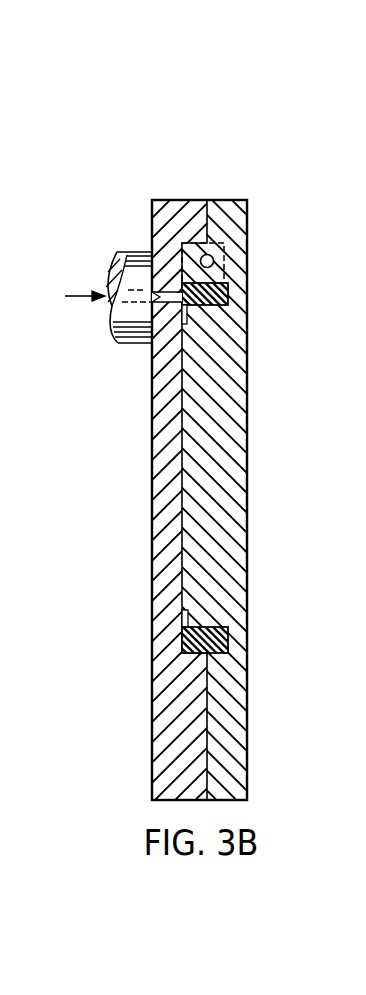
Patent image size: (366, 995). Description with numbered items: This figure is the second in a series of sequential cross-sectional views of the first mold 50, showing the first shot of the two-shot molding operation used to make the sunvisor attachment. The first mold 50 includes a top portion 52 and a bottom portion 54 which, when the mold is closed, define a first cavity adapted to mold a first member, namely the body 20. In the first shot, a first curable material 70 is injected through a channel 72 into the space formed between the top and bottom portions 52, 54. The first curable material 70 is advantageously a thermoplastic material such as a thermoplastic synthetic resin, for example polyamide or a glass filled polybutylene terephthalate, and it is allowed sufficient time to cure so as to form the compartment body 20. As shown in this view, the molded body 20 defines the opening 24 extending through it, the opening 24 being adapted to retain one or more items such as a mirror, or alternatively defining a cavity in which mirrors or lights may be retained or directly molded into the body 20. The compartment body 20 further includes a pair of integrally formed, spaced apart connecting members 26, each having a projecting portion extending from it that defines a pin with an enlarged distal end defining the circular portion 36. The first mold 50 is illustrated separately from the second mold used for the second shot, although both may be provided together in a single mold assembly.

The first mold 50 is at (287, 197).
The top portion 52 is at (233, 200).
The bottom portion 54 is at (183, 200).
The body 20 is at (236, 303).
The opening 24 is at (222, 308).
The connecting members 26 is at (222, 239).
The circular portion 36 is at (213, 263).
The first curable material 70 is at (212, 642).
The channel 72 is at (140, 289).